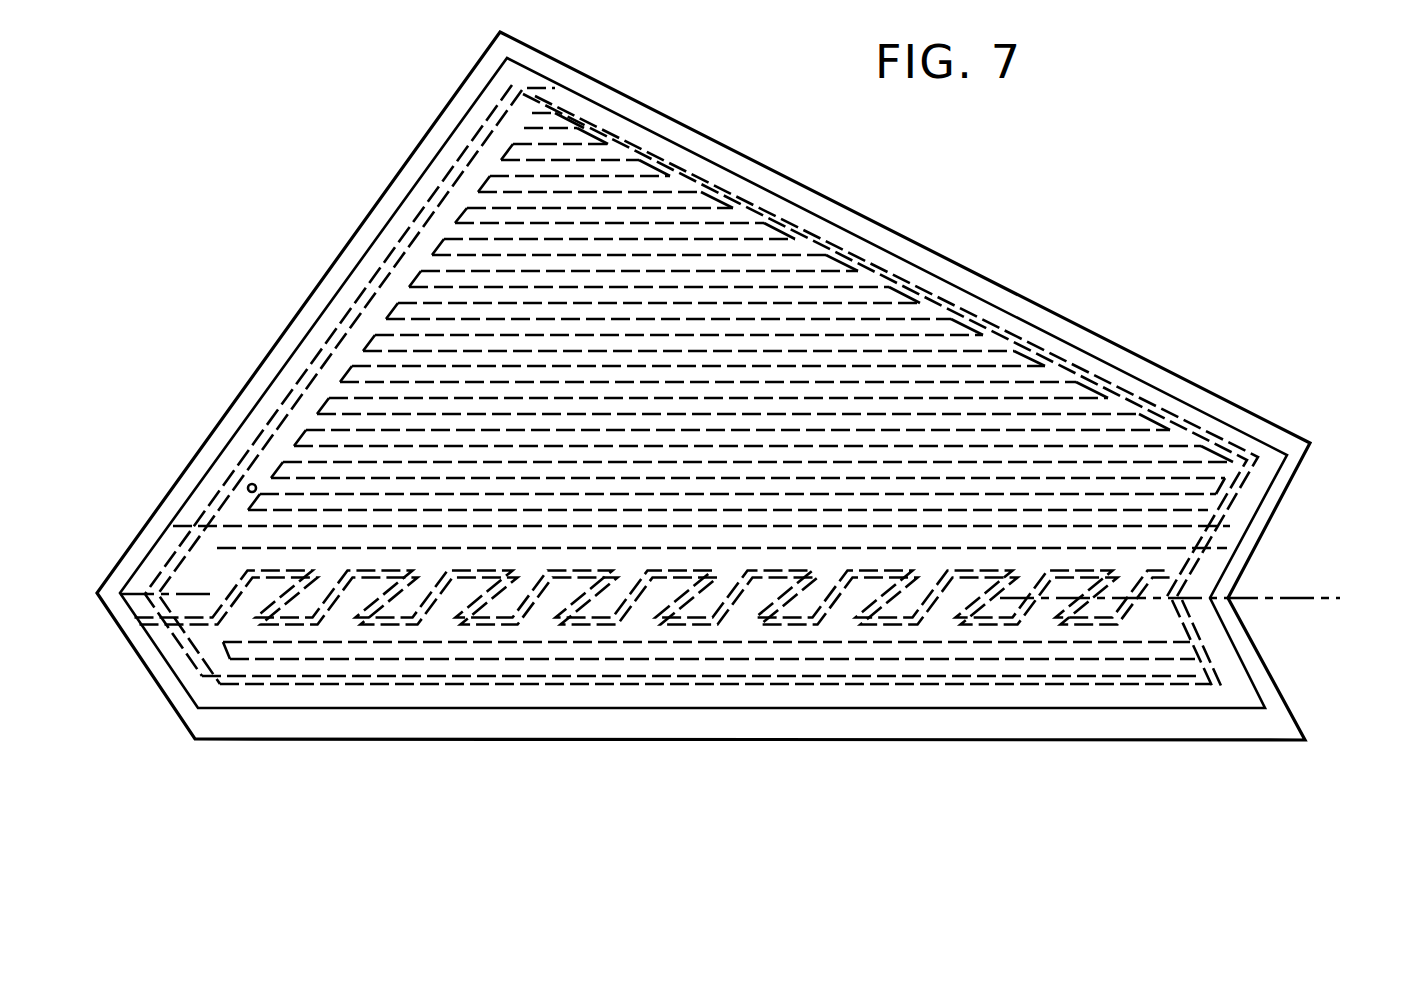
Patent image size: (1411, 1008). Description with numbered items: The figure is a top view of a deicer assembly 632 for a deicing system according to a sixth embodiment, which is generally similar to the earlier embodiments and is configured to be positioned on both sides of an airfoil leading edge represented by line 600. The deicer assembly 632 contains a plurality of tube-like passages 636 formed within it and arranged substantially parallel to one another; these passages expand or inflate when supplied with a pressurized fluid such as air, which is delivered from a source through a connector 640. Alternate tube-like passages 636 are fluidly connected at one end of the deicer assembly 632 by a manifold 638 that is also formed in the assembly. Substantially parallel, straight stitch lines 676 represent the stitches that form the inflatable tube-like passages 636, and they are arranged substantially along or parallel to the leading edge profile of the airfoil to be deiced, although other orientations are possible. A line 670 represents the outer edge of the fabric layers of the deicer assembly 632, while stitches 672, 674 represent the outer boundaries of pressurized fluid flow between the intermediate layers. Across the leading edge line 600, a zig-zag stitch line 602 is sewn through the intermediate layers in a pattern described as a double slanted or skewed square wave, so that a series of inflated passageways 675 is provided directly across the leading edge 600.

The leading edge line 600 is at (1312, 596).
The zig-zag stitch line 602 is at (1125, 620).
The deicer assembly 632 is at (732, 140).
The tube-like passages 636 is at (990, 352).
The manifold 638 is at (318, 343).
The connector 640 is at (250, 485).
The line representing outer edge of fabric layers 670 is at (677, 710).
The stitch 672 is at (447, 678).
The stitch 674 is at (549, 686).
The inflated passageways 675 is at (893, 610).
The straight stitch lines 676 is at (1140, 382).